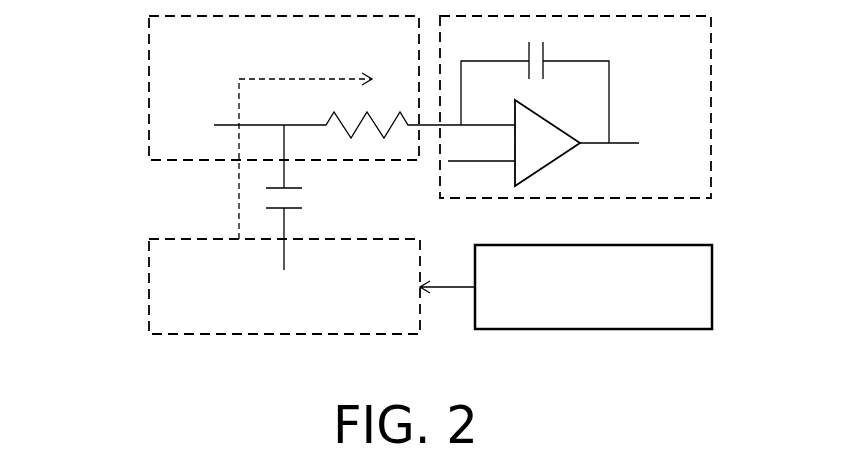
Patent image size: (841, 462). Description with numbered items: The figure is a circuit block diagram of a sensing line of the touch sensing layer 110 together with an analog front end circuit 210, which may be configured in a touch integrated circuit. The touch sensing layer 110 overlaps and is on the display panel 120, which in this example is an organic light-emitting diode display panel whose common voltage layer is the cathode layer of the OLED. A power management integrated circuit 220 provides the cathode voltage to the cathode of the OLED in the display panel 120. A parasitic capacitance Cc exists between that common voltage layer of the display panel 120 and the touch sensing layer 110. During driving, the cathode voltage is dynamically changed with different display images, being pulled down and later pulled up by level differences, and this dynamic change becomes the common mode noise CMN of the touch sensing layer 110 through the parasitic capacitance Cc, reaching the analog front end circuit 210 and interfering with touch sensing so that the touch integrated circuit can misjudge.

The touch sensing layer 110 is at (148, 88).
The display panel 120 is at (148, 288).
The analog front end circuit 210 is at (711, 105).
The power management integrated circuit 220 is at (712, 286).
The common mode noise CMN is at (238, 190).
The parasitic capacitance Cc is at (305, 197).